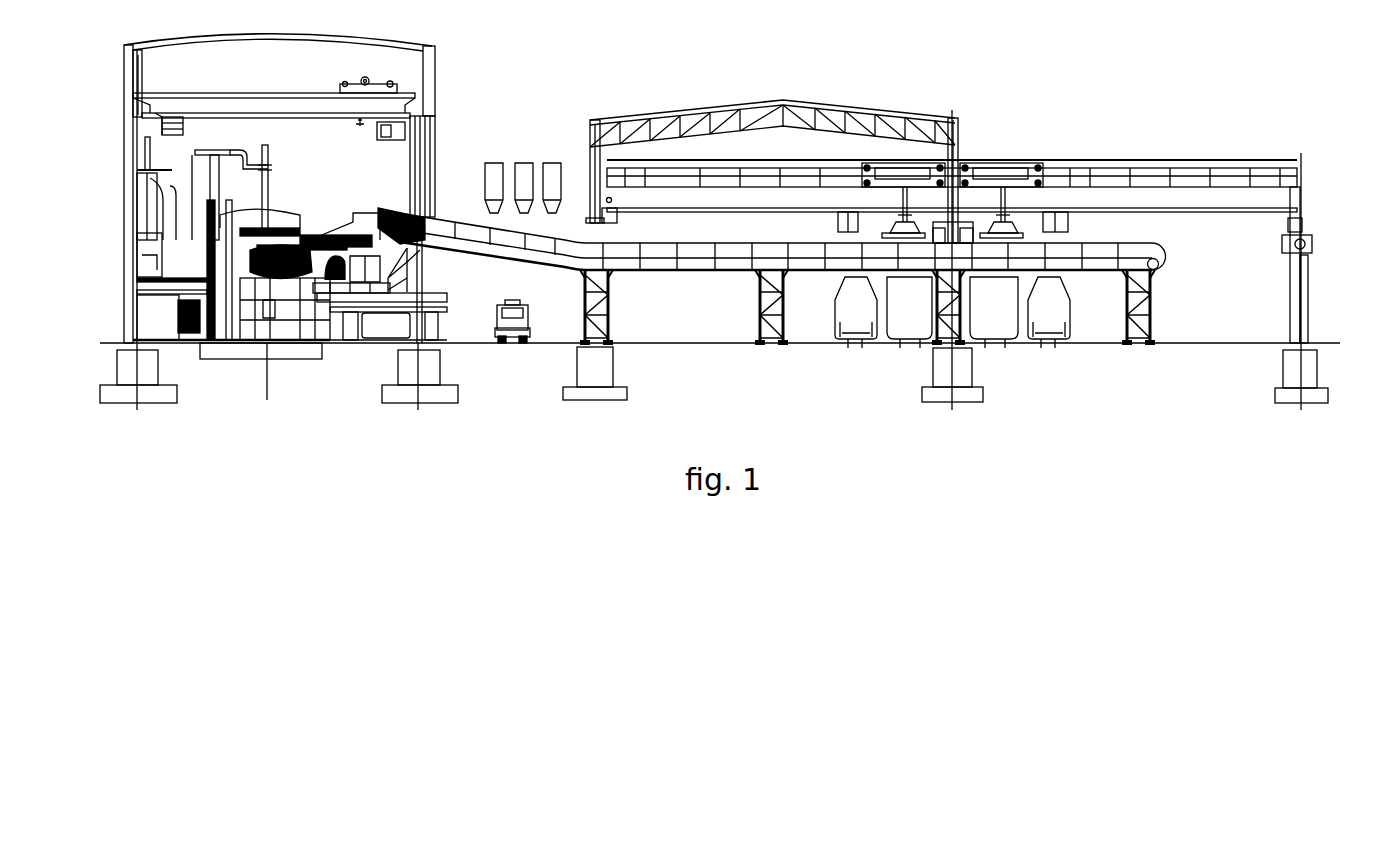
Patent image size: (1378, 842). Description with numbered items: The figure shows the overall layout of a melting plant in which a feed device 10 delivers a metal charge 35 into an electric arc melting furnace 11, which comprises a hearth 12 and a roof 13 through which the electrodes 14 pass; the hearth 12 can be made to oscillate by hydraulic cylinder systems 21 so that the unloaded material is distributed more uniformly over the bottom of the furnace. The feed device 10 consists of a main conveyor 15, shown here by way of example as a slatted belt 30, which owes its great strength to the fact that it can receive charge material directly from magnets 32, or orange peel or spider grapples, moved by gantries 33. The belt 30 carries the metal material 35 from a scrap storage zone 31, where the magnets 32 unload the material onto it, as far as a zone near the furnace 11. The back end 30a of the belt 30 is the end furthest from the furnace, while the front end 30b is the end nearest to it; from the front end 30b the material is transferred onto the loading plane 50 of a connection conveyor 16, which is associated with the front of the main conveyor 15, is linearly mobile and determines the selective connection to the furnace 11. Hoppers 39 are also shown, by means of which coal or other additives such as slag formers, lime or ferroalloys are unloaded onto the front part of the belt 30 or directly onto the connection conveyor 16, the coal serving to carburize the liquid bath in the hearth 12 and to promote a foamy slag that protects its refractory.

The feed device 10 is at (367, 188).
The electric arc melting furnace 11 is at (318, 342).
The hearth 12 is at (262, 310).
The roof 13 is at (250, 235).
The electrodes 14 is at (267, 187).
The main conveyor 15 is at (693, 288).
The connection conveyor 16 is at (330, 200).
The hydraulic cylinder systems 21 is at (235, 325).
The slatted belt 30 is at (815, 258).
The back end 30a is at (1163, 250).
The front end 30b is at (440, 225).
The scrap storage zone 31 is at (1222, 343).
The magnets 32 is at (840, 226).
The gantries 33 is at (1010, 165).
The metal charge 35 is at (424, 268).
The hoppers 39 is at (550, 172).
The loading plane 50 is at (368, 258).